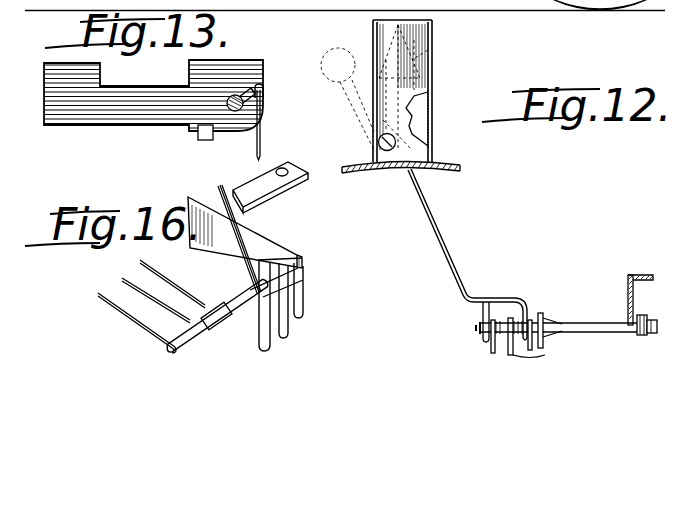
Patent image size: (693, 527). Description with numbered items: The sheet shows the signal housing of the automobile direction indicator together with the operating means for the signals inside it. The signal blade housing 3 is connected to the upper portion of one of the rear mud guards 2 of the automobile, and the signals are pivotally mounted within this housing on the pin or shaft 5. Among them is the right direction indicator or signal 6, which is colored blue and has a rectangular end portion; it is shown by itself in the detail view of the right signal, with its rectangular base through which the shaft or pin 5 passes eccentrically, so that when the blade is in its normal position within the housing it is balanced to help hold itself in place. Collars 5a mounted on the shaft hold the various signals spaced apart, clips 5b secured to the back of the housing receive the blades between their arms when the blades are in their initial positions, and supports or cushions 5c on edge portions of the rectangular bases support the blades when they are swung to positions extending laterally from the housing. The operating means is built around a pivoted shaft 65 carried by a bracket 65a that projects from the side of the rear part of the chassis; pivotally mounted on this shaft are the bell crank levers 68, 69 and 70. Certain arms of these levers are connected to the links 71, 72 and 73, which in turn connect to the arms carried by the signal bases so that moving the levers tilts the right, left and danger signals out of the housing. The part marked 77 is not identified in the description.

In FIG. 12, the base plate 2 is at (441, 174).
In FIG. 12, the lock casing 3 is at (432, 57).
In FIG. 13, the pin 5 is at (236, 111).
In FIG. 13, the pin head 5a is at (259, 88).
In FIG. 12, the pin head 5a is at (378, 142).
In FIG. 12, the lock recess 5b is at (422, 114).
In FIG. 13, the key lug 5c is at (205, 140).
In FIG. 13, the key 6 is at (151, 93).
In FIG. 12, the shaft 65 is at (541, 318).
In FIG. 16, the shaft 65 is at (235, 292).
In FIG. 12, the bracket 65a is at (626, 313).
In FIG. 16, the bracket 65a is at (286, 190).
In FIG. 12, the hook 68 is at (478, 334).
In FIG. 16, the hook 68 is at (259, 346).
In FIG. 12, the hook 69 is at (540, 352).
In FIG. 16, the hook 69 is at (289, 338).
In FIG. 12, the hook 70 is at (548, 337).
In FIG. 16, the hook 70 is at (304, 312).
In FIG. 12, the frame bar 71 is at (482, 312).
In FIG. 12, the plate 72 is at (505, 316).
In FIG. 16, the plate 72 is at (305, 298).
In FIG. 13, the rod 73 is at (260, 128).
In FIG. 12, the rod 73 is at (440, 269).
In FIG. 16, the rod 73 is at (248, 218).
In FIG. 16, the frame bar 77 is at (300, 290).